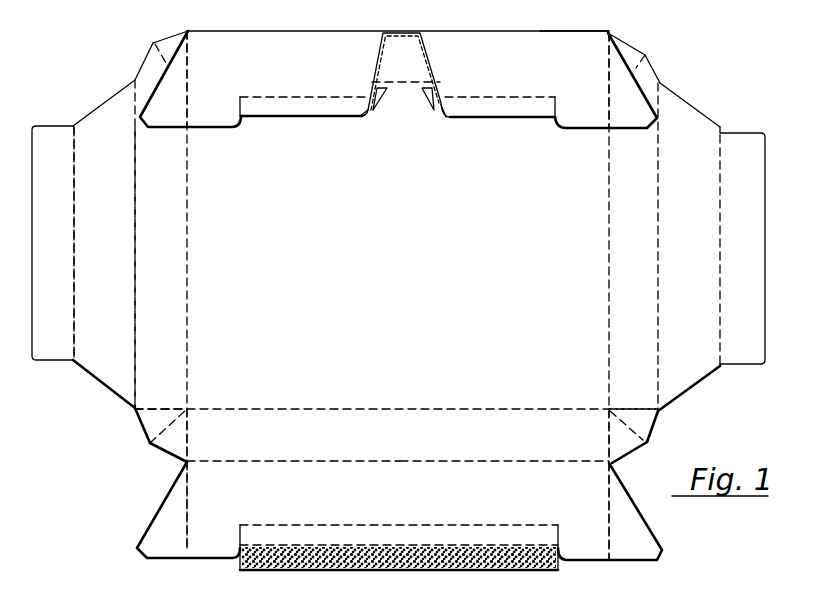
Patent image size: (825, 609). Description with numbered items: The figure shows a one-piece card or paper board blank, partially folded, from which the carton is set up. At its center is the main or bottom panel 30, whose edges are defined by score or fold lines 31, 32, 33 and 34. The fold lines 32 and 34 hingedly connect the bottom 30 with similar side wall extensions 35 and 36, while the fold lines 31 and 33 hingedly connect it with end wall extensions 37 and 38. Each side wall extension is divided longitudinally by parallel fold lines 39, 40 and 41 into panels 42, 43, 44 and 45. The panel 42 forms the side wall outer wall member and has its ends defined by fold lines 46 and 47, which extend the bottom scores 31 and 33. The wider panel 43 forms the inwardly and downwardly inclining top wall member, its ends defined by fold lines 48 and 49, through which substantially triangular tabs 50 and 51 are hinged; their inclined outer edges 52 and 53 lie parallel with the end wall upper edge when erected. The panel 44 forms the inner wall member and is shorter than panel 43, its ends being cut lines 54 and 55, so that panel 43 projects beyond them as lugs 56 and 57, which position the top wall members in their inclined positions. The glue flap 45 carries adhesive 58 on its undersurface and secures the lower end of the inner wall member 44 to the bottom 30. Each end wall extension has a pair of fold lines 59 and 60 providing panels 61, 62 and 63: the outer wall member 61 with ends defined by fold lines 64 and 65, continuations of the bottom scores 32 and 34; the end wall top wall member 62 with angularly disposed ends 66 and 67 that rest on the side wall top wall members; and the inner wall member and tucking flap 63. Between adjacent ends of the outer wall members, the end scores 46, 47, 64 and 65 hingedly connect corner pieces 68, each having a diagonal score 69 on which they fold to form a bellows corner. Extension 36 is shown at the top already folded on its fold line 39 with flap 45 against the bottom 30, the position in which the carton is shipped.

The main or bottom panel 30 is at (405, 208).
The score or fold line 31 is at (188, 207).
The score or fold line 32 is at (398, 85).
The score or fold line 33 is at (608, 231).
The score or fold line 34 is at (437, 412).
The side wall extension 35 is at (698, 507).
The side wall extension 36 is at (556, 29).
The end wall extension 37 is at (750, 409).
The end wall extension 38 is at (97, 423).
The score or fold line 39 is at (462, 30).
The score or fold line 40 is at (514, 98).
The score or fold line 41 is at (472, 118).
The side wall outer wall member panel 42 is at (413, 46).
The side wall top wall member panel 43 is at (313, 45).
The side wall inner wall member panel 44 is at (299, 104).
The glue flap 45 is at (430, 116).
The score or fold line 46 is at (189, 433).
The score or fold line 47 is at (607, 446).
The score or fold line 48 is at (189, 70).
The score or fold line 49 is at (607, 101).
The tab 50 is at (173, 127).
The tab 51 is at (625, 128).
The inclined or outer edge 52 is at (152, 98).
The inclined or outer edge 53 is at (640, 506).
The cut line 54 is at (246, 98).
The cut line 55 is at (554, 99).
The lug 56 is at (220, 127).
The lug 57 is at (584, 122).
The adhesive 58 is at (523, 569).
The score or fold line 59 is at (137, 190).
The score or fold line 60 is at (76, 213).
The end wall outer wall member panel 61 is at (170, 273).
The end wall top wall member panel 62 is at (122, 298).
The end wall inner wall member and tucking flap panel 63 is at (64, 328).
The score or fold line 64 is at (147, 76).
The score or fold line 65 is at (153, 405).
The biased or angularly disposed end 66 is at (108, 96).
The biased or angularly disposed end 67 is at (101, 385).
The corner piece 68 is at (168, 40).
The diagonal score 69 is at (160, 45).